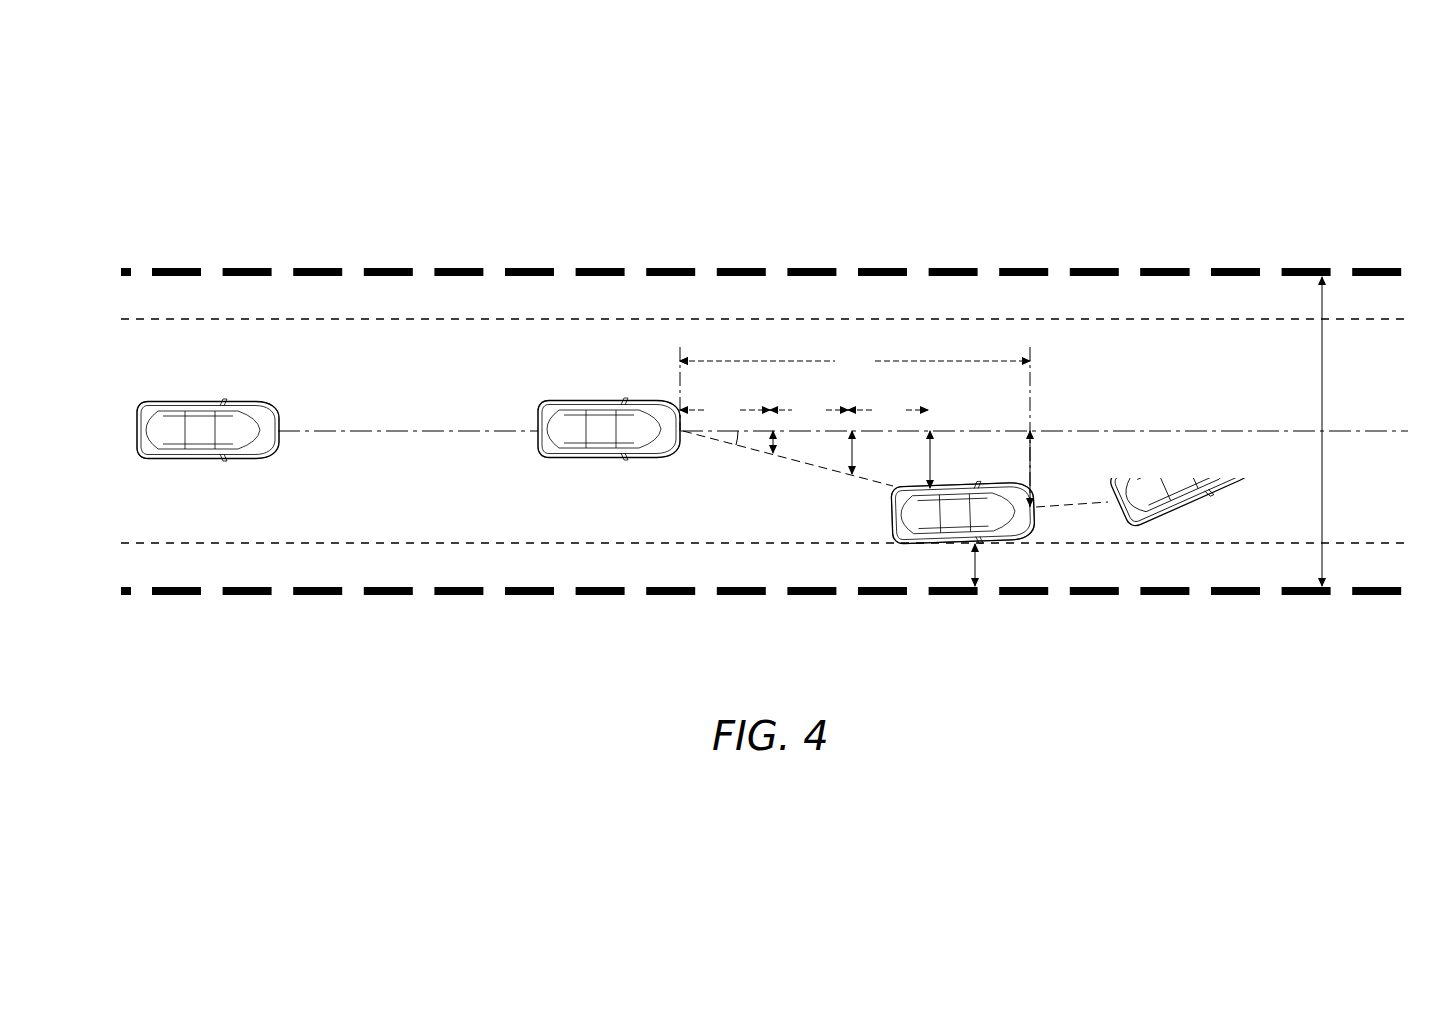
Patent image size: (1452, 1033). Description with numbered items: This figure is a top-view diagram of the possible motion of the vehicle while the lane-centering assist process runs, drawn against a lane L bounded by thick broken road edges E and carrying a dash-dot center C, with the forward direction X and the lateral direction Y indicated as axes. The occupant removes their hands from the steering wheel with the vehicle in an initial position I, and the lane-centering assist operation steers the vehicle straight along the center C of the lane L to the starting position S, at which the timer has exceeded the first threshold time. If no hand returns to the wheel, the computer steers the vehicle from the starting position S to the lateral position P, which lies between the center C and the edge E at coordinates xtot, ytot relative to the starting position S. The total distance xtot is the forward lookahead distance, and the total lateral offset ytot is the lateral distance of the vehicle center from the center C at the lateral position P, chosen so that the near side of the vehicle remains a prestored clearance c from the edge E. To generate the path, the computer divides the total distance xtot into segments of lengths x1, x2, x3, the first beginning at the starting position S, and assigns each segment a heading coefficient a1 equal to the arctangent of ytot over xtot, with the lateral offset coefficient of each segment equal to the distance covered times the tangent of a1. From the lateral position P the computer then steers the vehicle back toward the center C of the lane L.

The initial position I is at (200, 402).
The starting position S is at (605, 402).
The lateral position P is at (891, 521).
The edge of the lane E is at (1165, 268).
The lane L is at (1375, 380).
The center of the lane C is at (1347, 433).
The clearance c is at (980, 561).
The forward direction X is at (271, 170).
The lateral direction Y is at (189, 80).
The total distance xtot is at (855, 426).
The total lateral offset ytot is at (1033, 447).
The length of segment 1 x1 is at (725, 414).
The length of segment 2 x2 is at (809, 414).
The length of segment 3 x3 is at (888, 414).
The heading coefficient a1 is at (748, 447).